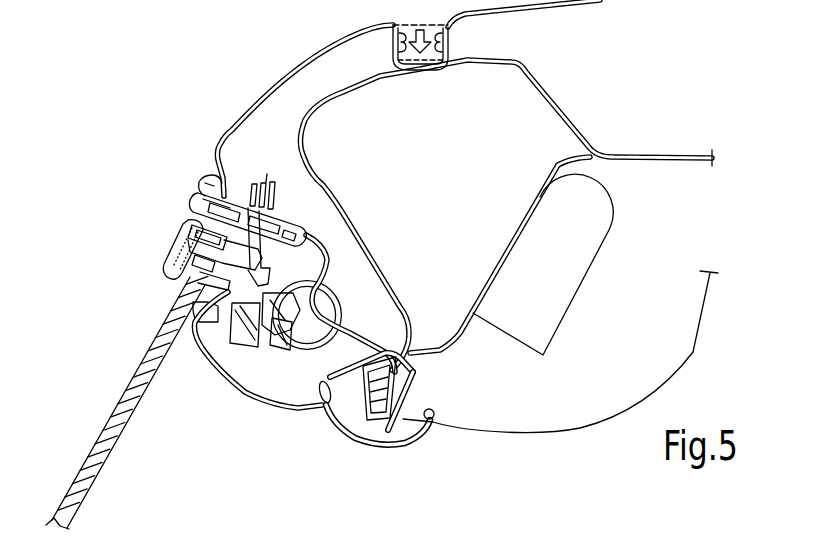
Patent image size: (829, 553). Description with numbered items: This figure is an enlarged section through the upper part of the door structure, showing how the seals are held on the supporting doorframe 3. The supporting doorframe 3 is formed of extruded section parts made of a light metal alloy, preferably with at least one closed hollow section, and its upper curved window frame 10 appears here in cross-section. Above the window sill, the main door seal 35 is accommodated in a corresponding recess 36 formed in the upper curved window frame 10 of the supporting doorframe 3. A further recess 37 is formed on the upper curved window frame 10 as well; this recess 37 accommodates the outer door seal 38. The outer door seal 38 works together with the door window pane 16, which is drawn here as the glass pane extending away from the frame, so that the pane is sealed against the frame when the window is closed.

The supporting doorframe 3 is at (324, 437).
The upper curved window frame 10 is at (264, 407).
The door window pane 16 is at (85, 470).
The main door seal 35 is at (345, 293).
The recess 36 is at (235, 305).
The recess 37 is at (196, 284).
The outer door seal 38 is at (173, 228).